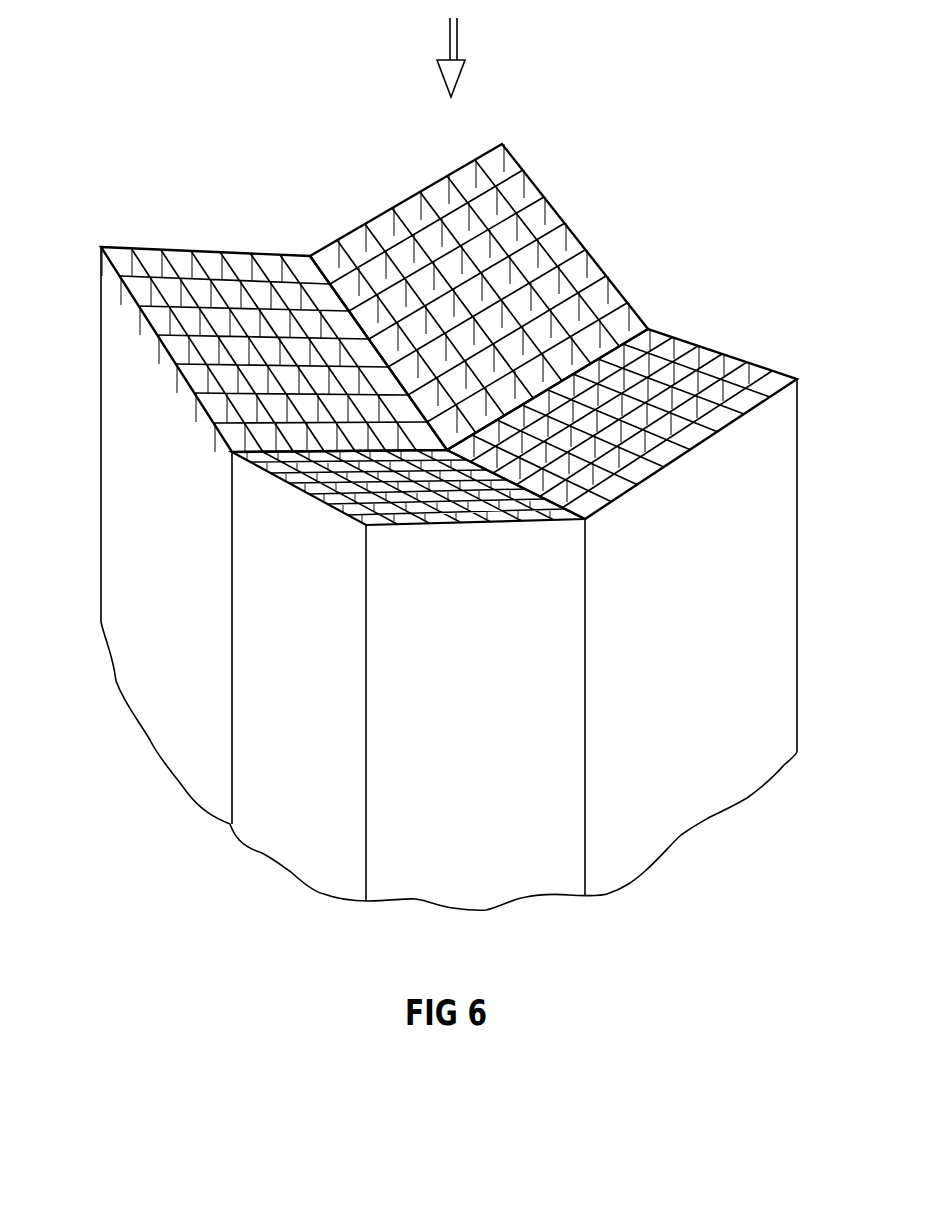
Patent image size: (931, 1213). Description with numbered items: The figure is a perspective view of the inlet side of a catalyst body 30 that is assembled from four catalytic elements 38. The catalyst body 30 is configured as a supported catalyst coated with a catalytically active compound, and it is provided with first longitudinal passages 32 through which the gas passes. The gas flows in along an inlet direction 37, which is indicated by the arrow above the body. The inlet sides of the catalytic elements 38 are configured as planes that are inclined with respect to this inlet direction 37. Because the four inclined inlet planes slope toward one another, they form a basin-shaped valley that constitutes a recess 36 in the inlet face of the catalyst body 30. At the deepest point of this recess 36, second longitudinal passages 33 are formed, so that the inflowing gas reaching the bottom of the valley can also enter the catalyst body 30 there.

The catalyst body 30 is at (757, 598).
The first longitudinal passages 32 is at (518, 193).
The second longitudinal passages 33 is at (447, 440).
The recess 36 is at (450, 438).
The inlet direction 37 is at (458, 37).
The catalytic elements 38 is at (318, 500).